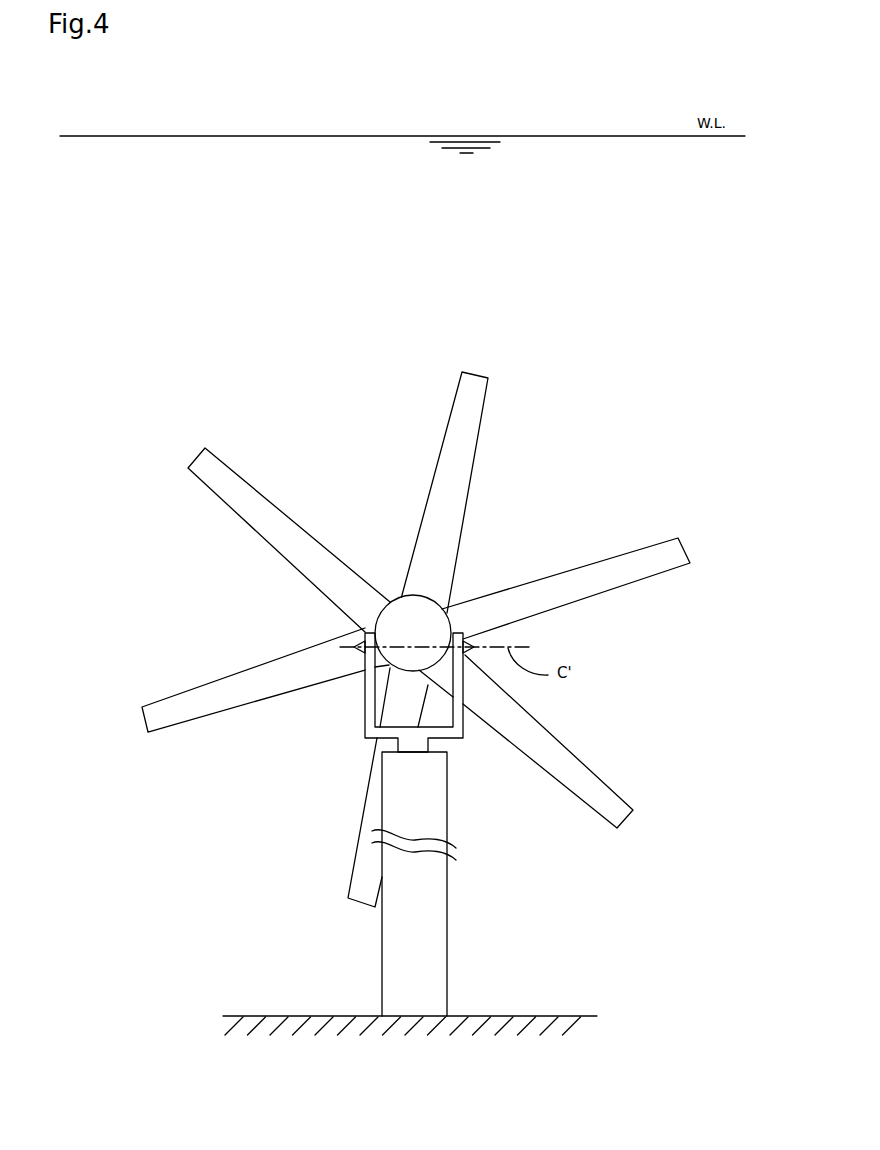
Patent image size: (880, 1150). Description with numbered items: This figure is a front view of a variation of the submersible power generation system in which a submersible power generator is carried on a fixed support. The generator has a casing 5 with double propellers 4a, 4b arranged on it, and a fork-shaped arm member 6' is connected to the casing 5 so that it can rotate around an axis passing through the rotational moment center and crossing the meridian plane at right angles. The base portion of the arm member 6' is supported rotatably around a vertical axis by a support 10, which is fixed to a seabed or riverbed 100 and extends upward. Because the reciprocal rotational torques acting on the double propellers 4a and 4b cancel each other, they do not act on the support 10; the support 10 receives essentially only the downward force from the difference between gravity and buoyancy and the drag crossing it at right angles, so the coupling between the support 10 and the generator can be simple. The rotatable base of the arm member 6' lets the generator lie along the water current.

The propeller 4a is at (458, 455).
The propeller 4b is at (580, 583).
The casing 5 is at (376, 605).
The fork-shaped arm member 6' is at (415, 692).
The support 10 is at (447, 815).
The seabed or riverbed 100 is at (518, 1066).